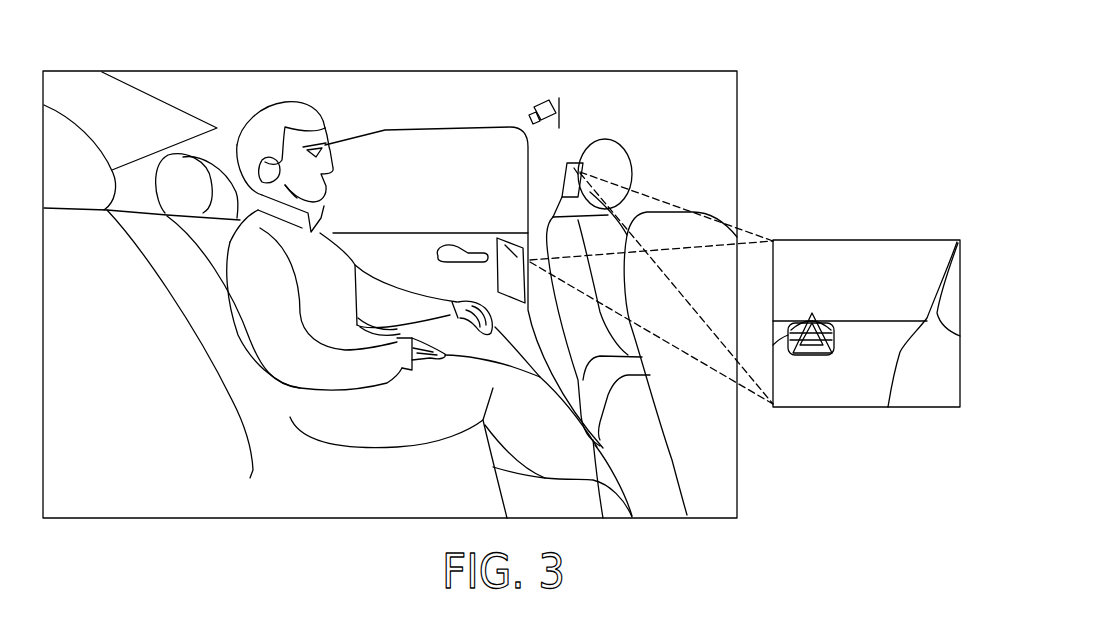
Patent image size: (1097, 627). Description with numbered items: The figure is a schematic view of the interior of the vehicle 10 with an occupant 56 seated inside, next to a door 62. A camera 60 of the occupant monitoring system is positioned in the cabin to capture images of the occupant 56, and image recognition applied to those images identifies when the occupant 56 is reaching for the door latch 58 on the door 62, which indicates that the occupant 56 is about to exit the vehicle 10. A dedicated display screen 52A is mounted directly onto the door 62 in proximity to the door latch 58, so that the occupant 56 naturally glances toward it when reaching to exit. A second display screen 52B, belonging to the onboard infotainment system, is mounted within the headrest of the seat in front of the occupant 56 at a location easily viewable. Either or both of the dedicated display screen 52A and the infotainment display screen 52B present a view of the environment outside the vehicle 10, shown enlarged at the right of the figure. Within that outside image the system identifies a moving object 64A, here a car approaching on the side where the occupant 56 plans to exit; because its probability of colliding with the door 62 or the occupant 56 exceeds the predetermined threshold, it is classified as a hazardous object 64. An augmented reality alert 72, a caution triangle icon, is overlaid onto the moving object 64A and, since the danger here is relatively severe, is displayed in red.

The vehicle 10 is at (930, 373).
The dedicated display screen 52A is at (515, 256).
The display screen of an onboard infotainment system 52B is at (580, 167).
The occupant 56 is at (268, 117).
The door latch 58 is at (467, 257).
The camera 60 is at (546, 100).
The door 62 is at (403, 260).
The hazardous object 64 is at (860, 280).
The moving object (car) 64A is at (830, 333).
The augmented reality alert 72 is at (812, 357).